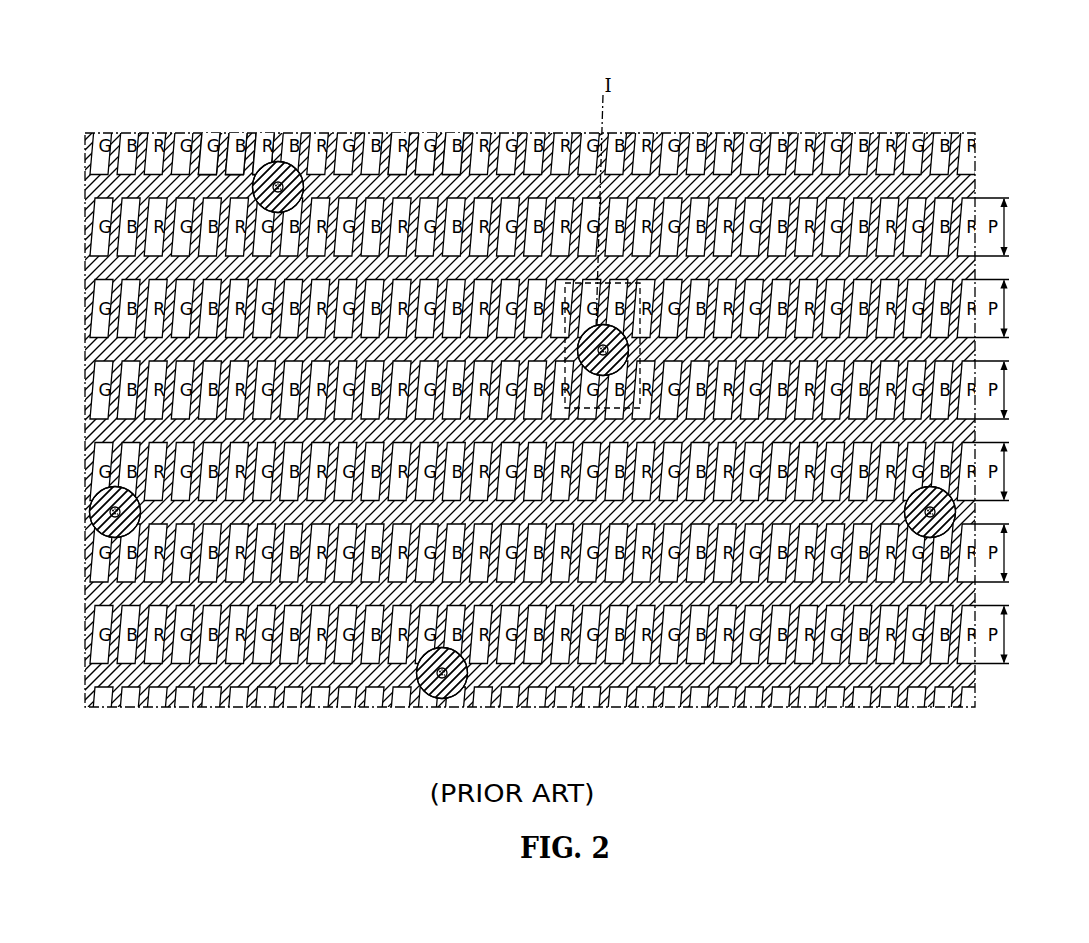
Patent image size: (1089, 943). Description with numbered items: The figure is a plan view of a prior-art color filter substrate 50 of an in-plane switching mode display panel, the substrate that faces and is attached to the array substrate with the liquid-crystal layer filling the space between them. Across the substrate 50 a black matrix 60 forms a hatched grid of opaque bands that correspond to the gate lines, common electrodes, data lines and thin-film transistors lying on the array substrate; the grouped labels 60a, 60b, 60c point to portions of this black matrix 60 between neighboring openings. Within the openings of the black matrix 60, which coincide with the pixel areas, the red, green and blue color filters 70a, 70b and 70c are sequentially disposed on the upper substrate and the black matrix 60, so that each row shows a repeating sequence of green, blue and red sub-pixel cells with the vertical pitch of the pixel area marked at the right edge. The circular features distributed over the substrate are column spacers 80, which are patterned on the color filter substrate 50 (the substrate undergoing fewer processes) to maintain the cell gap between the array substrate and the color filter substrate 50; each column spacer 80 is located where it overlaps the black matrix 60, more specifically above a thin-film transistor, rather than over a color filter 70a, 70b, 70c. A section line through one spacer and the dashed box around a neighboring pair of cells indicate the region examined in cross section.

The color filter substrate 50 is at (882, 103).
The black matrix 60 is at (313, 64).
The black matrix portion 60a is at (210, 182).
The black matrix portion 60b is at (243, 173).
The black matrix portion 60c is at (292, 173).
The red color filter 70a is at (403, 137).
The green color filter 70b is at (437, 137).
The blue color filter 70c is at (460, 137).
The column spacer 80 is at (612, 335).